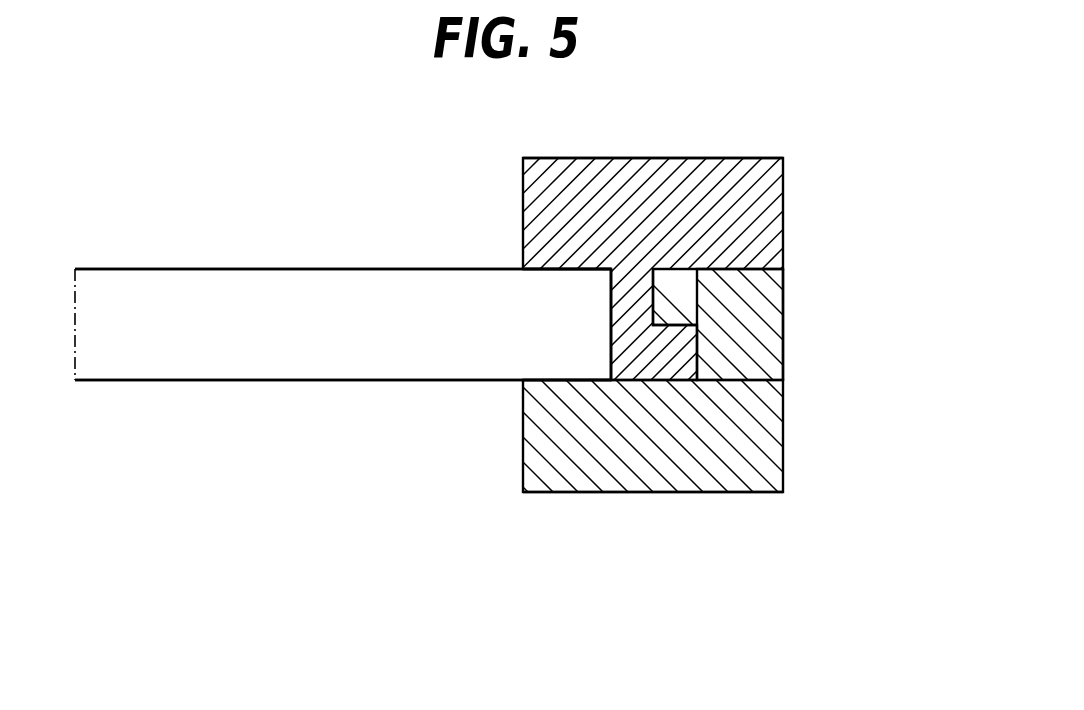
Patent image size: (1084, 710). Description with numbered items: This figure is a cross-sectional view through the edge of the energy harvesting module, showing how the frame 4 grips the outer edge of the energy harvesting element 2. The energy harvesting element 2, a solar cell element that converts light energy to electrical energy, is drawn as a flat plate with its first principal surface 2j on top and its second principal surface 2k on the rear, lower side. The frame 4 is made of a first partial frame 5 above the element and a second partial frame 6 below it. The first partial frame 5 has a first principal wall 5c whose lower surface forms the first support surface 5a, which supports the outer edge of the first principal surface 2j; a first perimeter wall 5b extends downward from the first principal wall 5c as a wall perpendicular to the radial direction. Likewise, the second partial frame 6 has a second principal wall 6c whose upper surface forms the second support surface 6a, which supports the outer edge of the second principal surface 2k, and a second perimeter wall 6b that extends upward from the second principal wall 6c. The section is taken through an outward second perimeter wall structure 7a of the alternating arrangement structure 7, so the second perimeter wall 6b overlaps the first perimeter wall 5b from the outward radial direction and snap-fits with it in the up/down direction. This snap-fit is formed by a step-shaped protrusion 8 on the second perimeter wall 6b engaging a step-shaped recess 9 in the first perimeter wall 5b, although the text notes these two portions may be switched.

The energy harvesting element 2 is at (223, 265).
The first principal surface 2j is at (285, 269).
The second principal surface 2k is at (260, 381).
The frame 4 is at (613, 325).
The first partial frame 5 is at (713, 153).
The first support surface 5a is at (553, 267).
The first perimeter wall 5b is at (635, 320).
The first principal wall 5c is at (648, 208).
The second partial frame 6 is at (704, 498).
The second support surface 6a is at (558, 380).
The second perimeter wall 6b is at (738, 337).
The second principal wall 6c is at (648, 443).
The alternating arrangement structure 7 is at (853, 324).
The outward second perimeter wall structure 7a is at (801, 306).
The protrusion 8 is at (648, 285).
The recess 9 is at (683, 310).